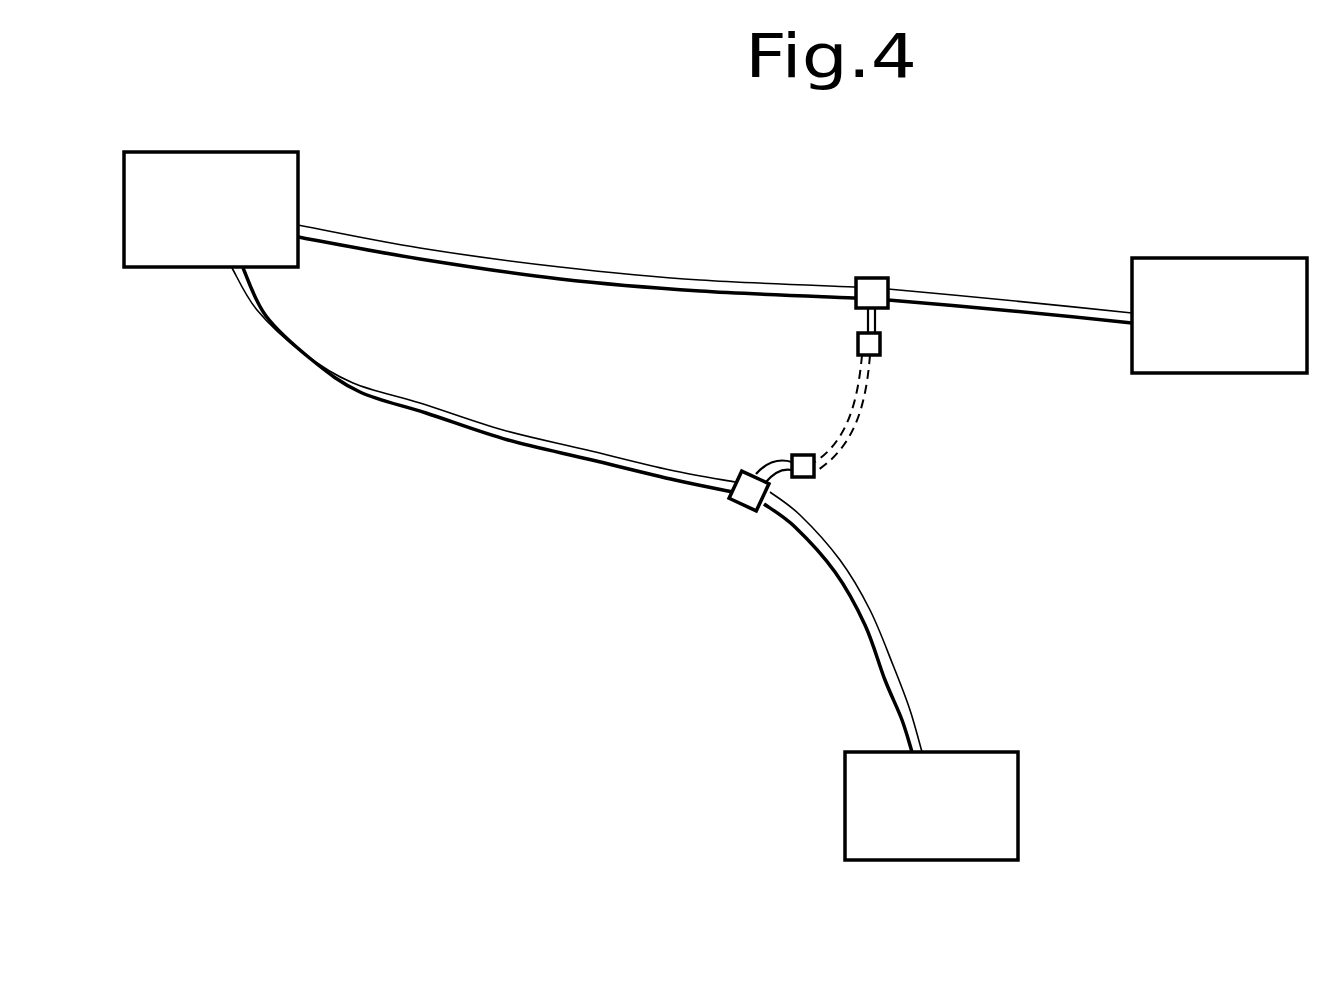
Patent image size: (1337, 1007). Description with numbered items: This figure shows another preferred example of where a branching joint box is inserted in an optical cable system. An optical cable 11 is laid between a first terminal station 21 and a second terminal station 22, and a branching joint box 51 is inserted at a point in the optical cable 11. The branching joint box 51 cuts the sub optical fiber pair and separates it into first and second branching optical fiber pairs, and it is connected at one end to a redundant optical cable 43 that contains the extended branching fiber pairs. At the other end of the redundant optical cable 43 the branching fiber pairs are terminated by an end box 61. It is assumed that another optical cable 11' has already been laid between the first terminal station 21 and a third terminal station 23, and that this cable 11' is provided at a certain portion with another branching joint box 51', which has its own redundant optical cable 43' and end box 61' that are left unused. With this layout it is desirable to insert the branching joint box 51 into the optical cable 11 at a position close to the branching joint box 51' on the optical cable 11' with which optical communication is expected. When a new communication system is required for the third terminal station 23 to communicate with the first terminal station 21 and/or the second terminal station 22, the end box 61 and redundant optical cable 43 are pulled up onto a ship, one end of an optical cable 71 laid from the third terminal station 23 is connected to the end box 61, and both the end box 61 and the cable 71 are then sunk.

The first terminal station 21 is at (212, 152).
The second terminal station 22 is at (1183, 258).
The third terminal station 23 is at (888, 862).
The optical cable 11 is at (715, 253).
The optical cable 11' is at (577, 510).
The branching joint box 51 is at (870, 252).
The branching joint box 51' is at (740, 524).
The redundant optical cable 43 is at (913, 330).
The redundant optical cable 43' is at (750, 444).
The end box 61 is at (897, 373).
The end box 61' is at (844, 487).
The optical cable 71 is at (853, 405).